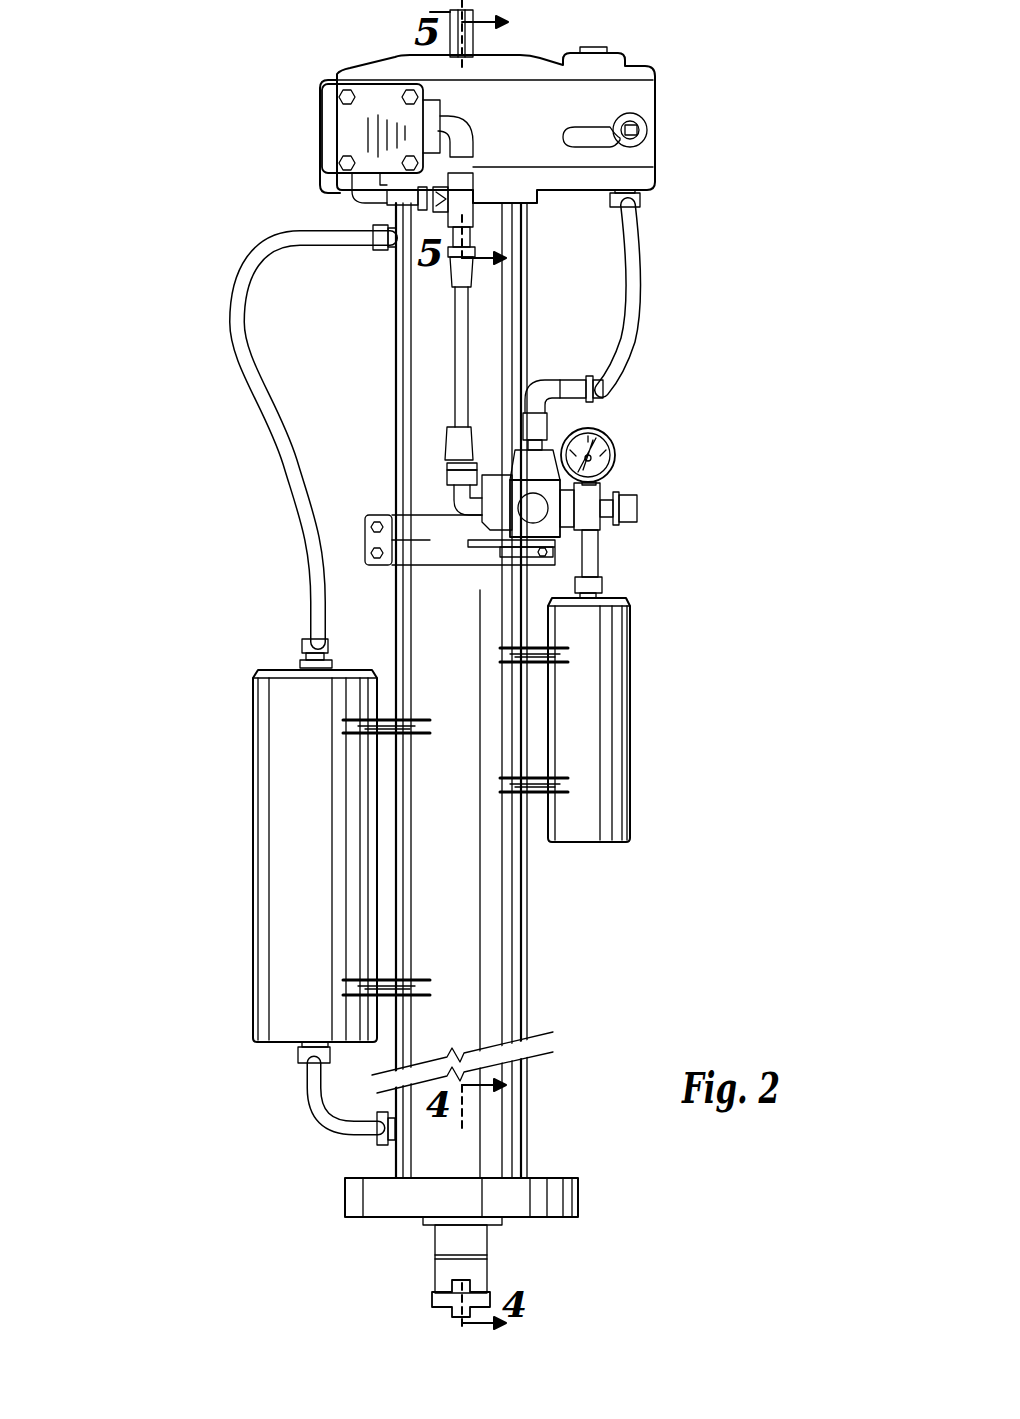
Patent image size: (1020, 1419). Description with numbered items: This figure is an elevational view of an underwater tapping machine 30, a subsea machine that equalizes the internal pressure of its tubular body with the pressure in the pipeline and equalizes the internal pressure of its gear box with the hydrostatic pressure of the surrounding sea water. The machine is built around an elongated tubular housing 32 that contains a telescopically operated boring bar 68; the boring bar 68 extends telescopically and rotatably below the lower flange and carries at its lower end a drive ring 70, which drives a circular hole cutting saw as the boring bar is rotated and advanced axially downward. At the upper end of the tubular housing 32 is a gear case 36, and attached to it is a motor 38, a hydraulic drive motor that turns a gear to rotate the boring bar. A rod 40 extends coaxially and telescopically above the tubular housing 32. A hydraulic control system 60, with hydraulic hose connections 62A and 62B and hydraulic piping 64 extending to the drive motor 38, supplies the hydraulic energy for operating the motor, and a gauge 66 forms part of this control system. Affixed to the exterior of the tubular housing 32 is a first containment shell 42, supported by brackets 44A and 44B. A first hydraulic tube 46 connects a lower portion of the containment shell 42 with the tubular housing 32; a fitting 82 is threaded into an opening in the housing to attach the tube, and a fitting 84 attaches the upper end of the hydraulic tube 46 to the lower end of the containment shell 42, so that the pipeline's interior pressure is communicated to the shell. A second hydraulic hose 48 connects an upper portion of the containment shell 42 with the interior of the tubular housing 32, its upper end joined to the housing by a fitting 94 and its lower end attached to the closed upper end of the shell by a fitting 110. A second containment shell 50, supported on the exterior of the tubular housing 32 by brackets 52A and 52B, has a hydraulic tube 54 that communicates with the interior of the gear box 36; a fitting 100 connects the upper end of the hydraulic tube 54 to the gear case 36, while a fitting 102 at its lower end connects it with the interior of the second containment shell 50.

The underwater tapping machine 30 is at (242, 548).
The tubular housing 32 is at (526, 915).
The gear case 36 is at (626, 95).
The motor 38 is at (352, 129).
The rod 40 is at (474, 45).
The first containment shell 42 is at (296, 825).
The bracket 44A is at (386, 724).
The bracket 44B is at (386, 984).
The first hydraulic tube 46 is at (326, 1108).
The second hydraulic hose 48 is at (270, 436).
The second containment shell 50 is at (614, 690).
The bracket 52A is at (546, 781).
The bracket 52B is at (546, 650).
The hydraulic tube 54 is at (636, 283).
The hydraulic control system 60 is at (566, 484).
The hydraulic hose connection 62A is at (638, 508).
The hydraulic hose connection 62B is at (598, 387).
The hydraulic piping 64 is at (458, 374).
The gauge 66 is at (606, 440).
The boring bar 68 is at (446, 1240).
The drive ring 70 is at (436, 1300).
The fitting 82 is at (384, 1145).
The fitting 84 is at (298, 1054).
The fitting 94 is at (386, 254).
The fitting 100 is at (641, 203).
The fitting 102 is at (603, 585).
The fitting 110 is at (301, 647).